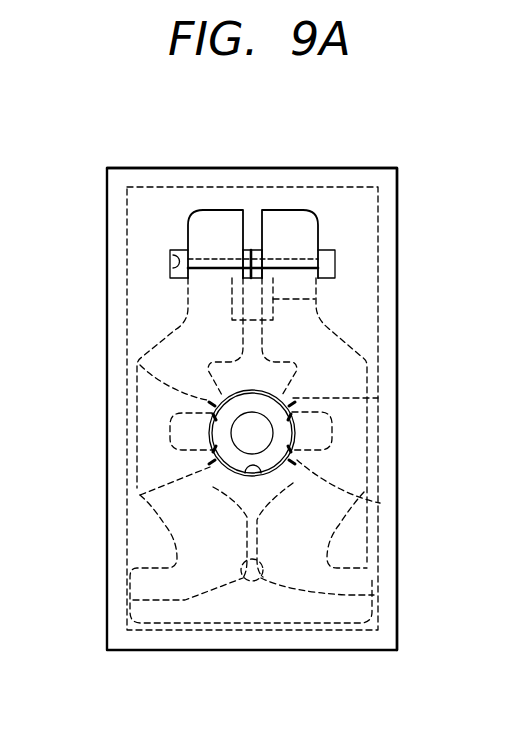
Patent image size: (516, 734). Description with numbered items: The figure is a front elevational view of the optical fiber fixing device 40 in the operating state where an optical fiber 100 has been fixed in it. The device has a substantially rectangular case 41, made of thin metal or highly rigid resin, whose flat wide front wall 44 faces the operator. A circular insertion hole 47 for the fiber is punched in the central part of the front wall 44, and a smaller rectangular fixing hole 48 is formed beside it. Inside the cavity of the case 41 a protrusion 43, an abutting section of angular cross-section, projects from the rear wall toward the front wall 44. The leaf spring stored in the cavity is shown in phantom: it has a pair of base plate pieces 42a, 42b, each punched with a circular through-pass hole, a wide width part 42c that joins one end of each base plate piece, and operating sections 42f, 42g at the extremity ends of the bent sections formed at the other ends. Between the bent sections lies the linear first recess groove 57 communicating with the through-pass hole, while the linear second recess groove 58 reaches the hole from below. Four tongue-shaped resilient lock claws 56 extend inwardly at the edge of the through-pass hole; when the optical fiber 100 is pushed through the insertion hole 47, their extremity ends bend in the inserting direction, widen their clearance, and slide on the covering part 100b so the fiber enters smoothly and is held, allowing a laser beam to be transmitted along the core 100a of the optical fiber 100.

The optical fiber fixing device 40 is at (356, 163).
The case 41 is at (398, 202).
The base plate piece 42a is at (140, 497).
The base plate piece 42b is at (345, 458).
The wide width part 42c is at (374, 603).
The operating section 42f is at (203, 232).
The operating section 42g is at (283, 217).
The protrusion 43 is at (315, 305).
The front wall 44 is at (362, 258).
The insertion hole 47 is at (266, 476).
The fixing hole 48 is at (170, 270).
The resilient lock claws 56 is at (140, 362).
The first recess groove 57 is at (255, 257).
The second recess groove 58 is at (130, 603).
The optical fiber 100 is at (243, 432).
The core 100a is at (212, 418).
The covering part 100b is at (225, 447).